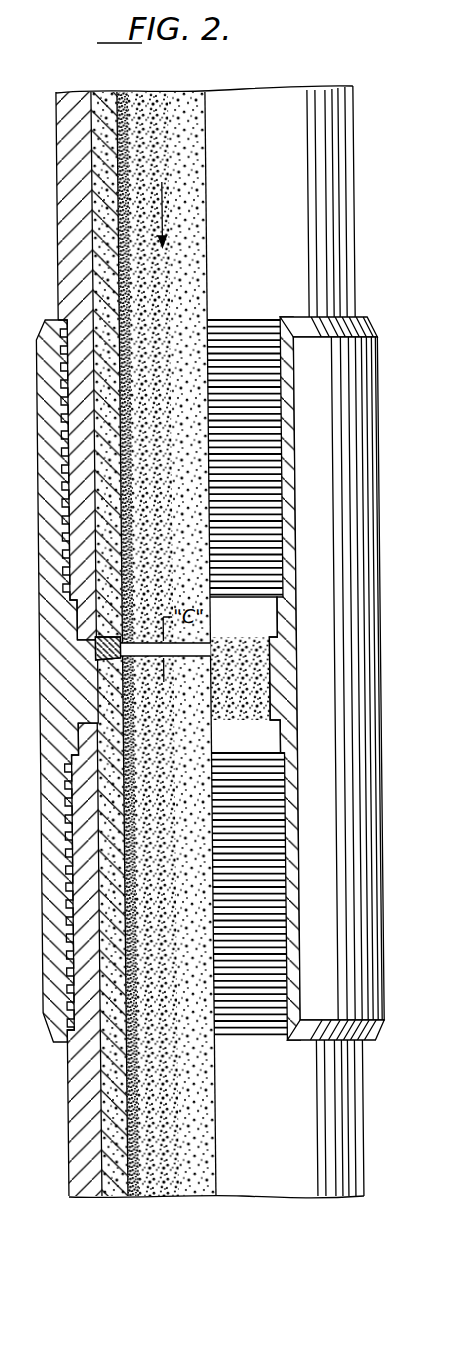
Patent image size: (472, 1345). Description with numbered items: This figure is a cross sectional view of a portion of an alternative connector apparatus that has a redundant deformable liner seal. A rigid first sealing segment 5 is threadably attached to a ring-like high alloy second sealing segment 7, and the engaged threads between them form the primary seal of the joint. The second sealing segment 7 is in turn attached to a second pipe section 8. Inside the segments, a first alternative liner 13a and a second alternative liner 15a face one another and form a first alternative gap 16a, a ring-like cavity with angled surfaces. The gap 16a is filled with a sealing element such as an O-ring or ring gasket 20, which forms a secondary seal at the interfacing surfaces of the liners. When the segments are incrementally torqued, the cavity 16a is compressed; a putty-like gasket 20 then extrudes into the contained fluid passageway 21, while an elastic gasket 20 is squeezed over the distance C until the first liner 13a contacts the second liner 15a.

The first sealing segment 5 is at (54, 210).
The second sealing segment 7 is at (36, 705).
The second pipe section 8 is at (56, 1112).
The first alternative liner 13a is at (123, 390).
The second alternative liner 15a is at (117, 813).
The first alternative gap 16a is at (121, 662).
The ring gasket 20 is at (84, 636).
The fluid passageway 21 is at (161, 202).